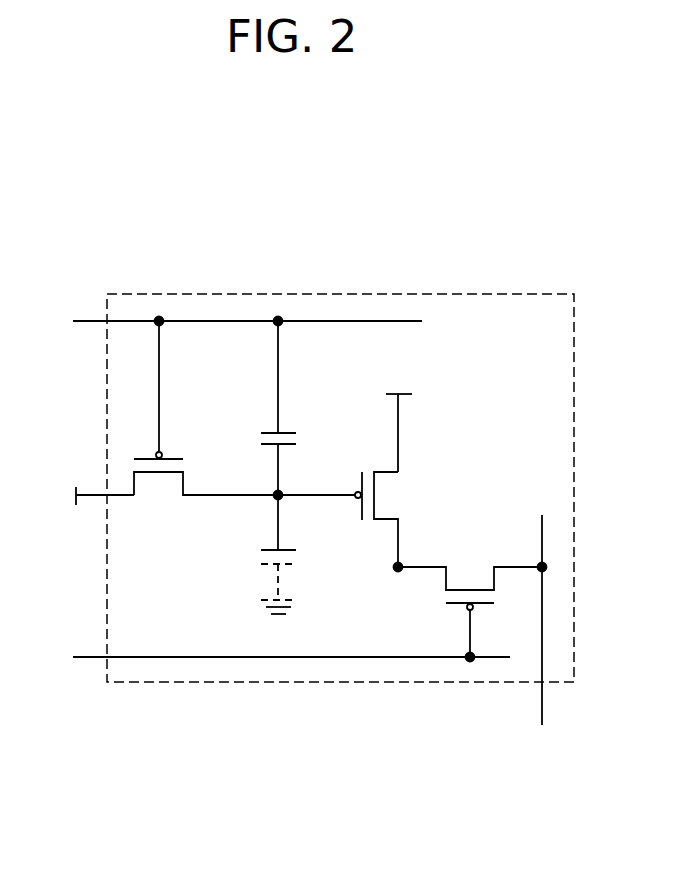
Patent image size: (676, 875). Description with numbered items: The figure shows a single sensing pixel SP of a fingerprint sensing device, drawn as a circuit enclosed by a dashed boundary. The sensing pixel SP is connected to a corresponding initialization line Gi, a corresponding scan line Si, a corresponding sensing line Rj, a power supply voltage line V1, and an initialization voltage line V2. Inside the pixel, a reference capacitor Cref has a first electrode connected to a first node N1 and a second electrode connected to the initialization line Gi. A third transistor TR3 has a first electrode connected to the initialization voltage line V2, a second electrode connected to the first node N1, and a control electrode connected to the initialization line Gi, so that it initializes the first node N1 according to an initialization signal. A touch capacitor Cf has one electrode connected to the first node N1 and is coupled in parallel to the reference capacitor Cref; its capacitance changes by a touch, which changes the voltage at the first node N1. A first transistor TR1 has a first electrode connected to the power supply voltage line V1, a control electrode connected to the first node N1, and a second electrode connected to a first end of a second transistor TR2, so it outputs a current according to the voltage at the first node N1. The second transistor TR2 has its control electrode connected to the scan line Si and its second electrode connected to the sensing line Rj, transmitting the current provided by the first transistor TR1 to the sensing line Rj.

The sensing pixel SP is at (500, 294).
The initialization line Gi is at (231, 321).
The scan line Si is at (276, 657).
The initialization voltage line V2 is at (89, 495).
The power supply voltage line V1 is at (400, 419).
The first transistor TR1 is at (399, 519).
The second transistor TR2 is at (468, 601).
The third transistor TR3 is at (206, 421).
The reference capacitor Cref is at (257, 408).
The touch capacitor Cf is at (264, 554).
The first node N1 is at (315, 484).
The sensing line Rj is at (542, 635).